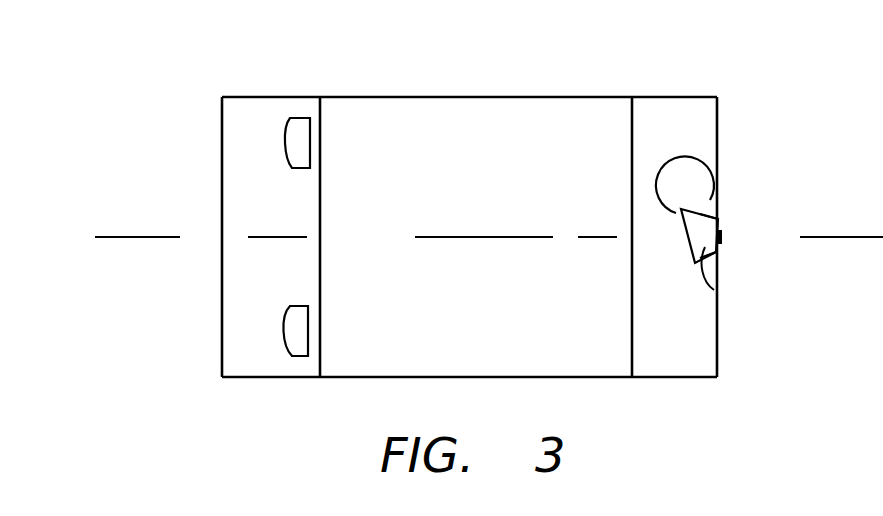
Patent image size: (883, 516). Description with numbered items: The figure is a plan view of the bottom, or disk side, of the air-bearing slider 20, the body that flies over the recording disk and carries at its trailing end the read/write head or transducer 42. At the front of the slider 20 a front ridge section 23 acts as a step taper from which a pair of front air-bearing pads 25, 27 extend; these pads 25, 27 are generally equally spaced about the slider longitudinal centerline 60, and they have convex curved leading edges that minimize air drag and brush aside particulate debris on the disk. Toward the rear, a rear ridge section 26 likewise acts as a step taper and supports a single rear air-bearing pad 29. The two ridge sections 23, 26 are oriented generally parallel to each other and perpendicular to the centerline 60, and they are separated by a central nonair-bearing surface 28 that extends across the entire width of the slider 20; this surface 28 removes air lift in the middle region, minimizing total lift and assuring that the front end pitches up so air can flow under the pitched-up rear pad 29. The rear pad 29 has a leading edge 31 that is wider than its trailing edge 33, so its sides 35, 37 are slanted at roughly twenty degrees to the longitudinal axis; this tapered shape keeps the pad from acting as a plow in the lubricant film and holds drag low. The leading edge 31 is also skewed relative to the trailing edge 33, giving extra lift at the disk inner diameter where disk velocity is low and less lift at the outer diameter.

The air-bearing slider 20 is at (655, 68).
The front ridge section 23 is at (237, 172).
The front air-bearing pad 25 is at (300, 350).
The rear ridge section 26 is at (687, 122).
The front air-bearing pad 27 is at (305, 121).
The central nonair-bearing surface 28 is at (486, 126).
The rear air-bearing pad 29 is at (706, 258).
The leading edge 31 is at (704, 158).
The trailing edge 33 is at (712, 218).
The side of rear pad 35 is at (714, 290).
The side of rear pad 37 is at (697, 210).
The read/write head or transducer 42 is at (722, 239).
The slider longitudinal centerline 60 is at (124, 237).